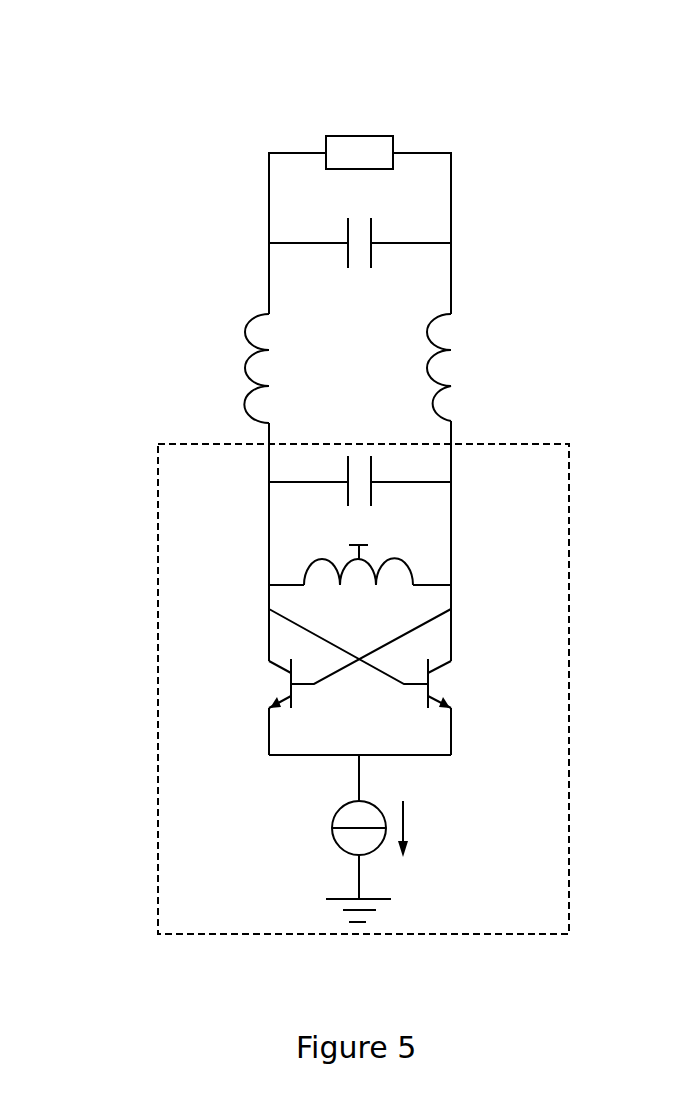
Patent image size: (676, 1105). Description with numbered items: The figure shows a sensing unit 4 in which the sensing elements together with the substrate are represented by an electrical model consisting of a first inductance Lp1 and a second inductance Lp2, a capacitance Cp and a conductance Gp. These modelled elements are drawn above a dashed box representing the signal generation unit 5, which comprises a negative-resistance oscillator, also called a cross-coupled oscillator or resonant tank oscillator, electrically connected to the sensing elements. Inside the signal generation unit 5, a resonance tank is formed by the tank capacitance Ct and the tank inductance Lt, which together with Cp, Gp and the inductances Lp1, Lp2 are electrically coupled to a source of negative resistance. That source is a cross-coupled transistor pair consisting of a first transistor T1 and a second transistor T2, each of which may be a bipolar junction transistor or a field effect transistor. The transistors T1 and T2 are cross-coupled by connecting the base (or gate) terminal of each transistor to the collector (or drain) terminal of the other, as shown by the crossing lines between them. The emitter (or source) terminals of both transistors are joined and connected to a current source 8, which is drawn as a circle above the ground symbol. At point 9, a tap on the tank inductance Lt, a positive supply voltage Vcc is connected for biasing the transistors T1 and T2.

The sensing unit 4 is at (68, 99).
The signal generation unit 5 is at (157, 580).
The current source 8 is at (333, 840).
The point 9 is at (353, 540).
The conductance Gp is at (355, 135).
The capacitance Cp is at (357, 223).
The first inductance Lp1 is at (243, 397).
The second inductance Lp2 is at (445, 373).
The tank capacitance Ct is at (370, 487).
The tank inductance Lt is at (305, 570).
The first transistor T1 is at (268, 685).
The second transistor T2 is at (450, 683).